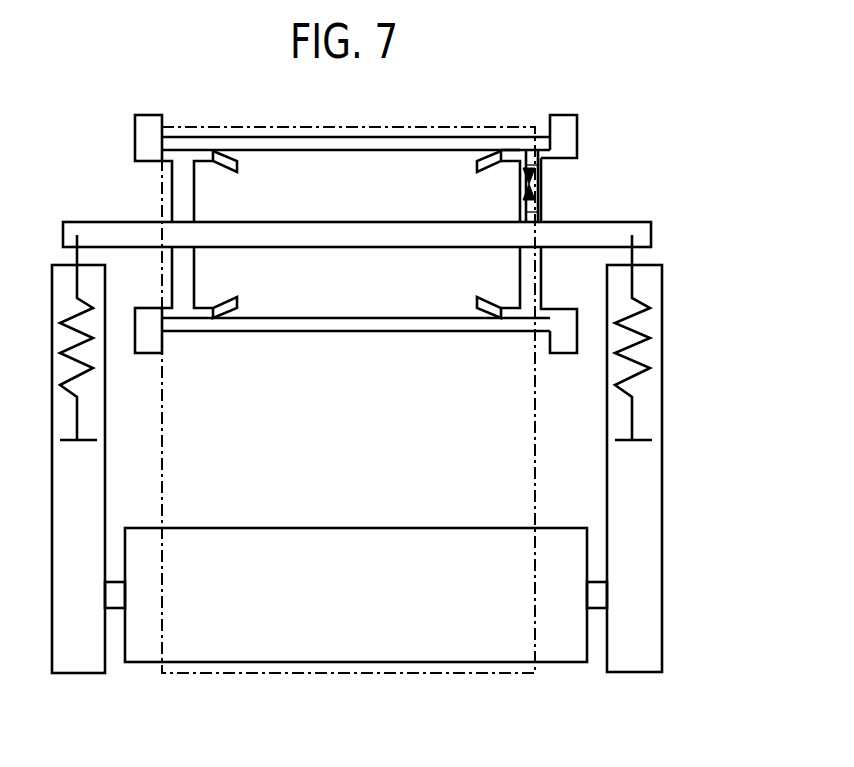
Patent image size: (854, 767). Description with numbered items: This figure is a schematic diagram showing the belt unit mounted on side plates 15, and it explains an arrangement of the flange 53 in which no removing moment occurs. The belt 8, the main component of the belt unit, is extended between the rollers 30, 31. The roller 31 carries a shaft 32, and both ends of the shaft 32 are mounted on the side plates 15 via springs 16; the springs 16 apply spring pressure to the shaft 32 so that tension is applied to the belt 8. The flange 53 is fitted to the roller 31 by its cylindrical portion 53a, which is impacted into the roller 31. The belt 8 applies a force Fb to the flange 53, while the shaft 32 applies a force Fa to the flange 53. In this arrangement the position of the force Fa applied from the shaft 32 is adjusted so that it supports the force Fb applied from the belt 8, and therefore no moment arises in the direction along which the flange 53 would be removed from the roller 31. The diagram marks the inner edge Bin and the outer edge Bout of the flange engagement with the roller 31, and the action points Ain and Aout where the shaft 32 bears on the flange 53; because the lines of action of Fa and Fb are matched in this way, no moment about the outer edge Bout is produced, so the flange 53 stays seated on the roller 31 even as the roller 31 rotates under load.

The belt 8 is at (520, 407).
The side plates 15 is at (652, 546).
The springs 16 is at (73, 422).
The roller 30 is at (558, 538).
The roller 31 is at (299, 146).
The shaft 32 is at (651, 236).
The flange 53 is at (196, 189).
The cylindrical portion 53a is at (519, 158).
The inner edge Bin is at (499, 144).
The outer edge Bout is at (557, 150).
The force Fb is at (525, 169).
The force Fa is at (527, 212).
The inner action point Ain is at (518, 228).
The outer action point Aout is at (544, 228).